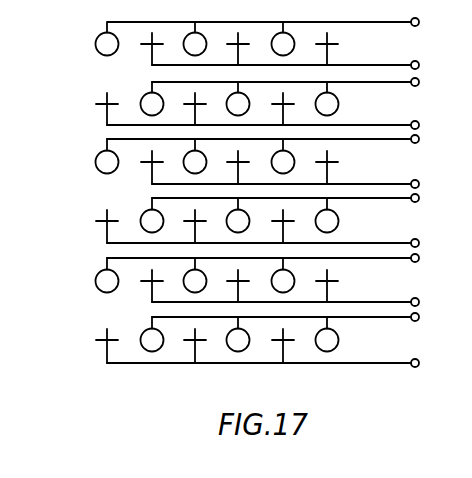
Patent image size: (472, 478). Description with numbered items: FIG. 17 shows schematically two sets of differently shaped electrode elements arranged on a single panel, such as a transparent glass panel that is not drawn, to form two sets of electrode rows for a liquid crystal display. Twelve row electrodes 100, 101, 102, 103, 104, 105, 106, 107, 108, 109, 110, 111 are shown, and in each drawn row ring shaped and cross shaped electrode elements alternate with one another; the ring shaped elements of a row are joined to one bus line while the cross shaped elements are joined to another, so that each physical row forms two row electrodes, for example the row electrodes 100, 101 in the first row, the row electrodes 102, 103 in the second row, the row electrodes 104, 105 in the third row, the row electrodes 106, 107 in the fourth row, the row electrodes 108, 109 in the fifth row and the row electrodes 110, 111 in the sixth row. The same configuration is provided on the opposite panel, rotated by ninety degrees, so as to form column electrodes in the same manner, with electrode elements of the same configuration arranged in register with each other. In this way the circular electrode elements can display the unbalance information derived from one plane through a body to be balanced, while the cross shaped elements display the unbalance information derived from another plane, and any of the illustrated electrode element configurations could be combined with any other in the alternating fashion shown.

The row electrode 100 is at (96, 45).
The row electrode 101 is at (373, 63).
The row electrode 102 is at (382, 83).
The row electrode 103 is at (105, 117).
The row electrode 104 is at (388, 139).
The row electrode 105 is at (393, 183).
The row electrode 106 is at (142, 213).
The row electrode 107 is at (387, 242).
The row electrode 108 is at (96, 279).
The row electrode 109 is at (390, 300).
The row electrode 110 is at (142, 330).
The row electrode 111 is at (385, 362).